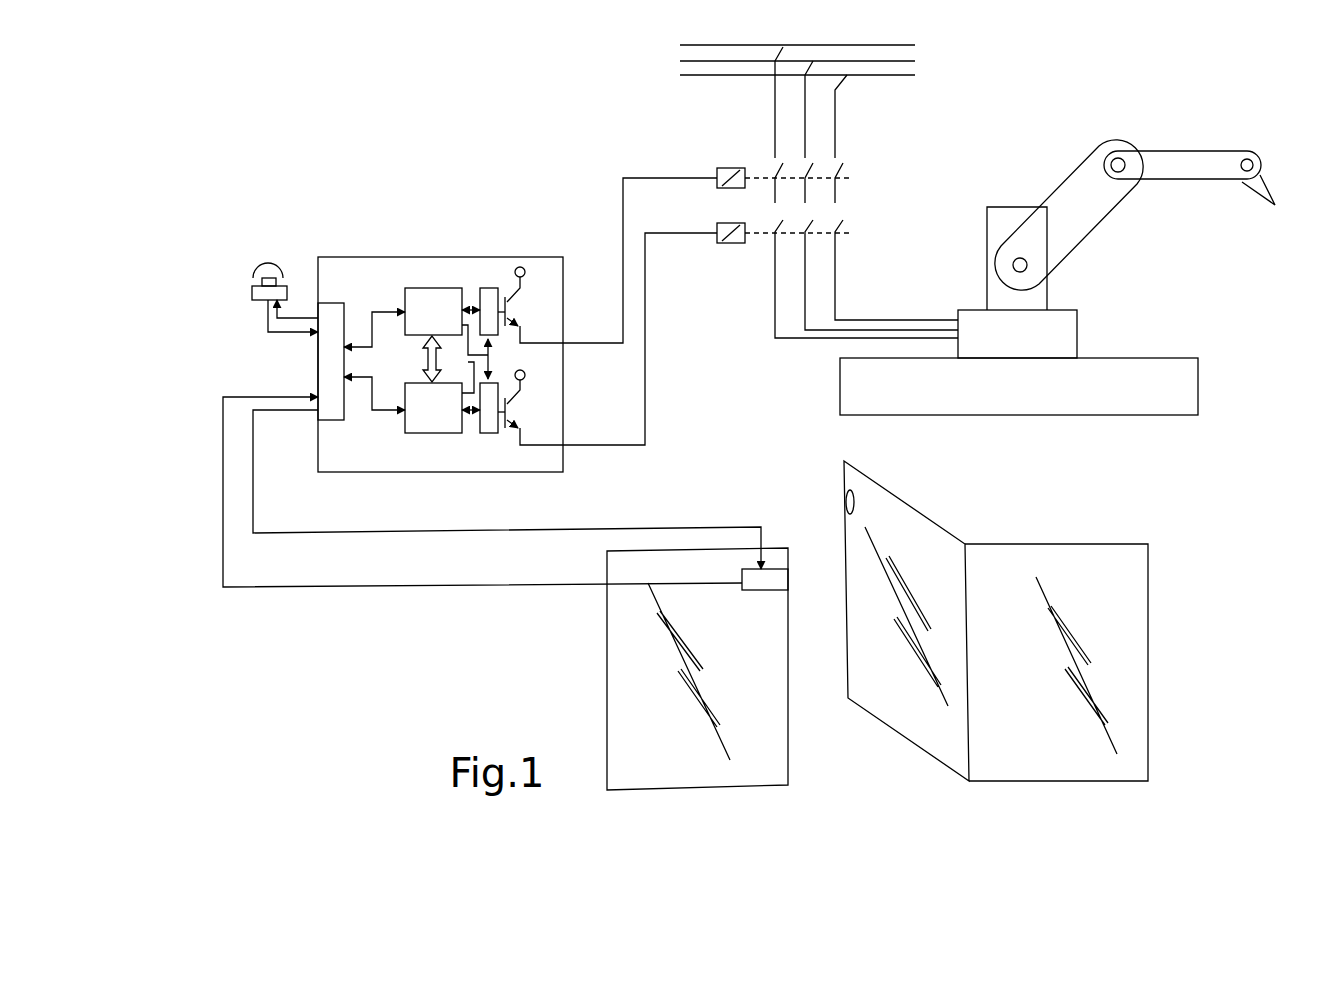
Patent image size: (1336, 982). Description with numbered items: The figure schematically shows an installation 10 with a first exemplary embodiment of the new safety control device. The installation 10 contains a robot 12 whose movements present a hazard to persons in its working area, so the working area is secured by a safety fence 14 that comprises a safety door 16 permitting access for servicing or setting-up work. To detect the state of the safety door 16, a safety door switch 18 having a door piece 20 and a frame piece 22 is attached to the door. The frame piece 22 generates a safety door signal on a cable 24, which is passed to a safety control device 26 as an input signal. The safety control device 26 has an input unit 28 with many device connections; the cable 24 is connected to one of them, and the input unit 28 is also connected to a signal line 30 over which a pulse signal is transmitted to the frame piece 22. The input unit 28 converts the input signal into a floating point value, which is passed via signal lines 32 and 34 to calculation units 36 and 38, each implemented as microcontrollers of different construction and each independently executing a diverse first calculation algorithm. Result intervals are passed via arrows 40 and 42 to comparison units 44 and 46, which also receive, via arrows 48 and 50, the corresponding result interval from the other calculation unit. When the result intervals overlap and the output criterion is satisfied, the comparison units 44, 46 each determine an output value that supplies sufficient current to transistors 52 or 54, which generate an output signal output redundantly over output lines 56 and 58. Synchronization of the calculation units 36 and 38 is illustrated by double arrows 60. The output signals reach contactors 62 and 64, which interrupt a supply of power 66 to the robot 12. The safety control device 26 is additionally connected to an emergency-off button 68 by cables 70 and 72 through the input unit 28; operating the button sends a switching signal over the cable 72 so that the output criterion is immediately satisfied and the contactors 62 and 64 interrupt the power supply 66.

The installation 10 is at (474, 184).
The robot 12 is at (1185, 375).
The safety fence 14 is at (1132, 565).
The safety door 16 is at (905, 515).
The safety door switch 18 is at (851, 777).
The door piece 20 is at (844, 490).
The frame piece 22 is at (776, 577).
The cable 24 is at (395, 588).
The safety control device 26 is at (548, 272).
The input unit 28 is at (335, 307).
The signal line 30 is at (377, 533).
The signal line 32 is at (382, 307).
The signal line 34 is at (388, 408).
The calculation unit 36 is at (443, 288).
The calculation unit 38 is at (437, 422).
The arrow 40 is at (468, 300).
The arrow 42 is at (473, 420).
The comparison unit 44 is at (488, 288).
The comparison unit 46 is at (492, 433).
The arrow 48 is at (463, 352).
The arrow 50 is at (456, 377).
The transistor 52 is at (512, 313).
The transistor 54 is at (510, 415).
The output line 56 is at (588, 340).
The output line 58 is at (590, 442).
The double arrows 60 is at (420, 367).
The contactor 62 is at (730, 168).
The contactor 64 is at (735, 243).
The supply of power 66 is at (877, 121).
The emergency-off button 68 is at (252, 292).
The cable 70 is at (302, 315).
The cable 72 is at (287, 333).